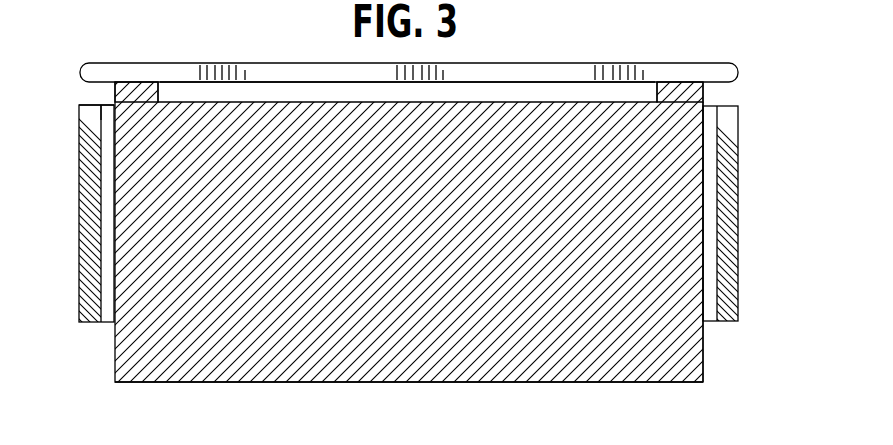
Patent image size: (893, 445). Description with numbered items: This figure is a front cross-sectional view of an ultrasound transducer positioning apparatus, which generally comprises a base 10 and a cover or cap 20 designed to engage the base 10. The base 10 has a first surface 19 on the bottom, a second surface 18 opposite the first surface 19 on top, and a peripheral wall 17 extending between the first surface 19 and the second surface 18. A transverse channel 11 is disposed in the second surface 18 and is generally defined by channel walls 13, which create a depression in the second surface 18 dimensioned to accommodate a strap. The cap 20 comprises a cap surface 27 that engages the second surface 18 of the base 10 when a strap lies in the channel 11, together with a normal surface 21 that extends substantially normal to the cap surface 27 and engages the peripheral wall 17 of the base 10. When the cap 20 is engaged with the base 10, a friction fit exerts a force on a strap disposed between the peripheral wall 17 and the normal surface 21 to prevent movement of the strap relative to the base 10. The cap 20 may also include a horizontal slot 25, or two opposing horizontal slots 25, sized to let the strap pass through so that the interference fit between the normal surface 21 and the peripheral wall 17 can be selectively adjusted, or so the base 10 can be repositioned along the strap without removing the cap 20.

The base 10 is at (115, 350).
The channel 11 is at (542, 85).
The channel walls 13 is at (157, 93).
The peripheral wall 17 is at (703, 347).
The second surface 18 is at (117, 116).
The first surface 19 is at (197, 382).
The cap 20 is at (79, 258).
The normal surface 21 is at (739, 177).
The horizontal slot 25 is at (722, 94).
The cap surface 27 is at (280, 82).